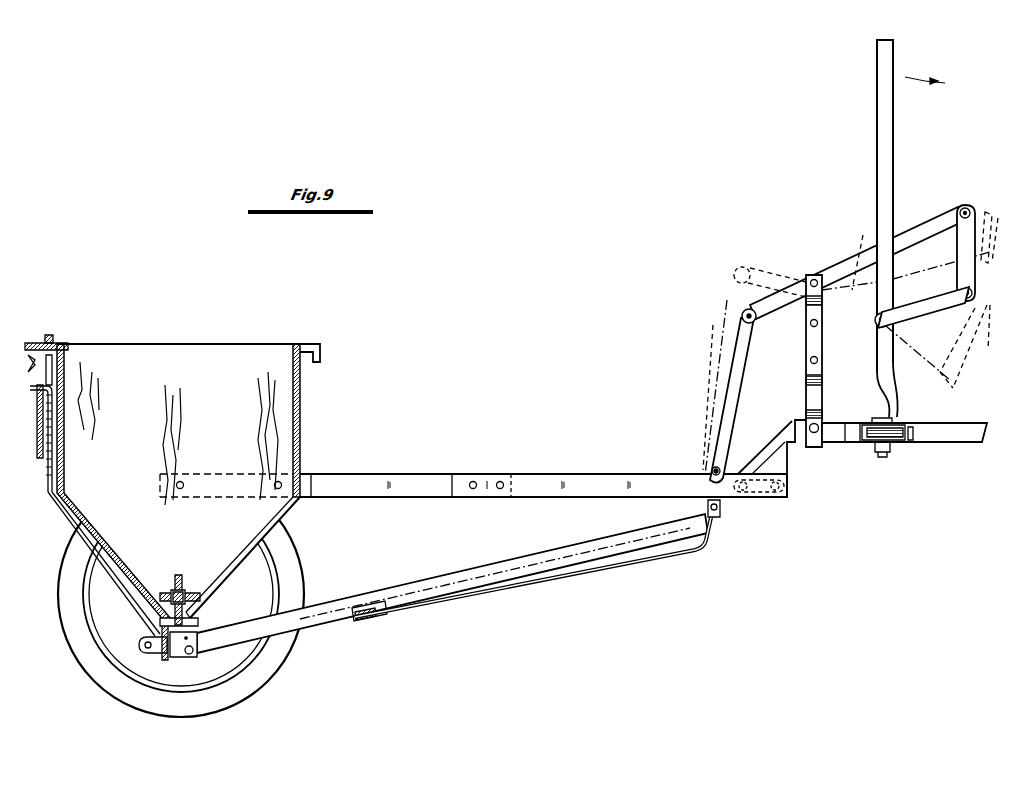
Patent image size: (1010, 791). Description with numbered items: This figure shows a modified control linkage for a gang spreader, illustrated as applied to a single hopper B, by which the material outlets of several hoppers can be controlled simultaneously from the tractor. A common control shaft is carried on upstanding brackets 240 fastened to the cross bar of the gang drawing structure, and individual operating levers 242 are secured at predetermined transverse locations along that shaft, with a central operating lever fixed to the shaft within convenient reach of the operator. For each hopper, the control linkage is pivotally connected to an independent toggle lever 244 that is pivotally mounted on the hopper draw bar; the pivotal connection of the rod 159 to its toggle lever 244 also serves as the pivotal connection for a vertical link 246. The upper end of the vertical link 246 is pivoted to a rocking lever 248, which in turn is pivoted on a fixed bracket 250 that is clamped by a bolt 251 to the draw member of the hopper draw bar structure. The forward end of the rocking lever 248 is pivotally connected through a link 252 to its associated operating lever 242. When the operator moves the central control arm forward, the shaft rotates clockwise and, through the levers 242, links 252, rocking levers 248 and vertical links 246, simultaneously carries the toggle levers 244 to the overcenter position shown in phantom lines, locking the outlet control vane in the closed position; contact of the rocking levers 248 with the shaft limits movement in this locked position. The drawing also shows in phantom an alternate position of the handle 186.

The hopper B is at (258, 360).
The rod 159 is at (640, 562).
The handle (phantom position) 186 is at (992, 230).
The upstanding bracket 240 is at (903, 385).
The operating lever 242 is at (947, 312).
The toggle lever 244 is at (711, 465).
The vertical link 246 is at (740, 350).
The rocking lever 248 is at (835, 268).
The fixed bracket 250 is at (806, 362).
The bolt 251 is at (819, 426).
The link 252 is at (957, 255).